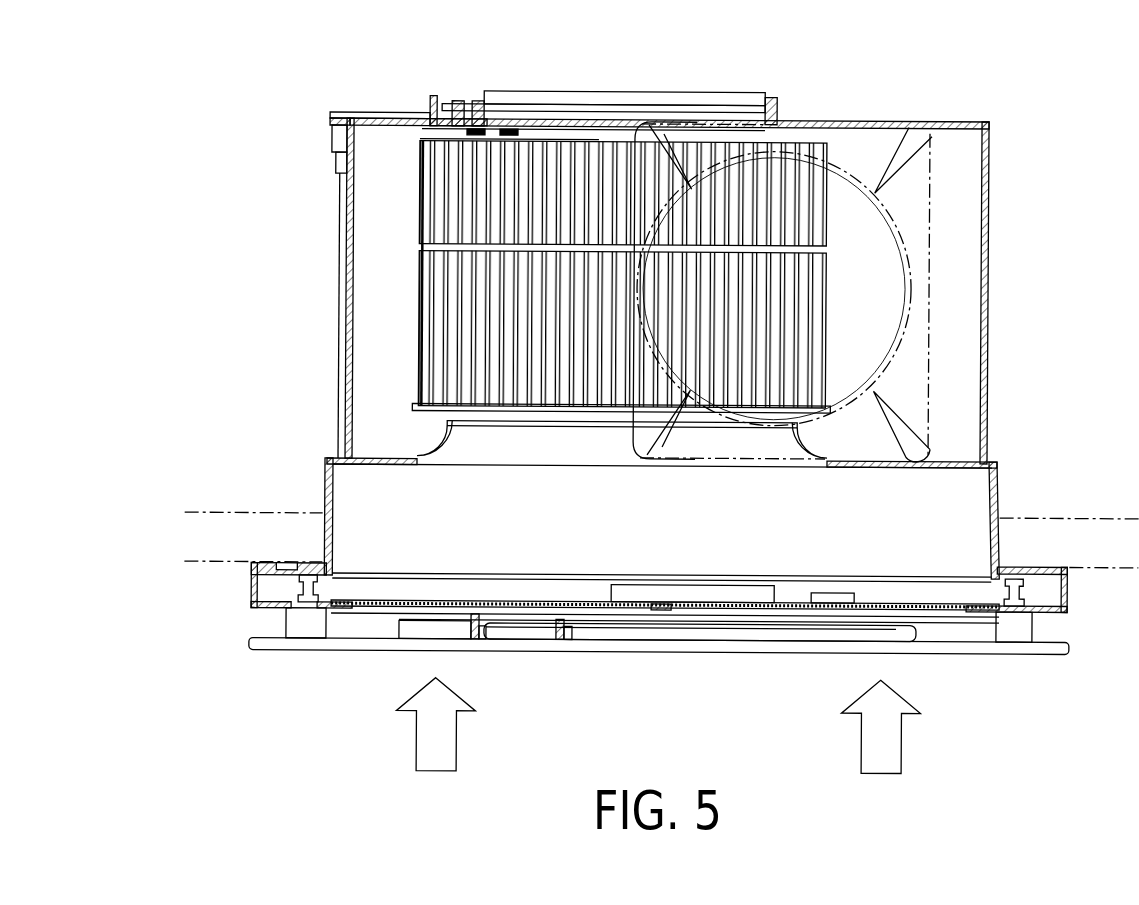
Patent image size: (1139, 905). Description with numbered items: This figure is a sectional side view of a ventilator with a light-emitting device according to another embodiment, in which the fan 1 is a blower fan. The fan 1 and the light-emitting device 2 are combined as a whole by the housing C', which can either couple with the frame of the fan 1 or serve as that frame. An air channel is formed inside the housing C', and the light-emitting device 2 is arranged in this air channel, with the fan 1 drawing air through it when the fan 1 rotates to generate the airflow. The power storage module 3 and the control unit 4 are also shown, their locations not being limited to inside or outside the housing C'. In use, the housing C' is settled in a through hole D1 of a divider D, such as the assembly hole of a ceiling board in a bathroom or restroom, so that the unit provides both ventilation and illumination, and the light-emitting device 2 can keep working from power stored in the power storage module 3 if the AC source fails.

The fan 1 is at (442, 182).
The light-emitting device 2 is at (798, 633).
The power storage module 3 is at (725, 583).
The control unit 4 is at (832, 597).
The housing C' is at (1052, 302).
The divider D is at (1067, 527).
The through hole D1 is at (1002, 508).